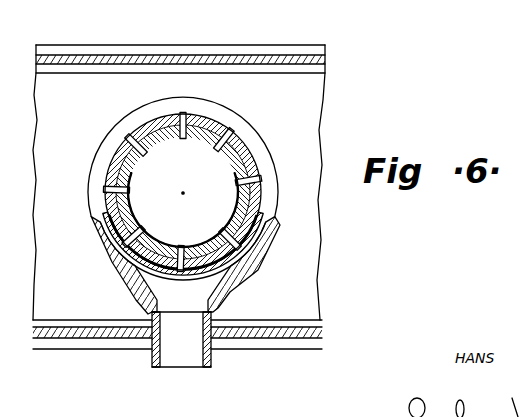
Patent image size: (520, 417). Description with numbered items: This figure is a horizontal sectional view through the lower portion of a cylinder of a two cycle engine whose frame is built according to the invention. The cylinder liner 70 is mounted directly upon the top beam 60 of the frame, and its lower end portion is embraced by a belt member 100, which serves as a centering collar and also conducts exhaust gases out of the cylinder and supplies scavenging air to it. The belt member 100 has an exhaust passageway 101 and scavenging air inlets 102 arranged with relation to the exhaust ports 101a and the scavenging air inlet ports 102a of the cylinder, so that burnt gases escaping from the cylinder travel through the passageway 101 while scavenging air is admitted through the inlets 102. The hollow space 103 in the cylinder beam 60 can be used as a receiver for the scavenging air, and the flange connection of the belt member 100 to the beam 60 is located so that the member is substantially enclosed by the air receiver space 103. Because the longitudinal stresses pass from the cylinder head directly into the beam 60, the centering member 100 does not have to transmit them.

The top beam of the frame 60 is at (78, 338).
The cylinder liner 70 is at (129, 150).
The belt member 100 is at (93, 213).
The exhaust passageway 101 is at (185, 300).
The exhaust port 101a is at (183, 266).
The scavenging air inlet 102 is at (258, 152).
The scavenging air inlet port 102a is at (112, 186).
The hollow space in the cylinder beam 103 is at (110, 88).